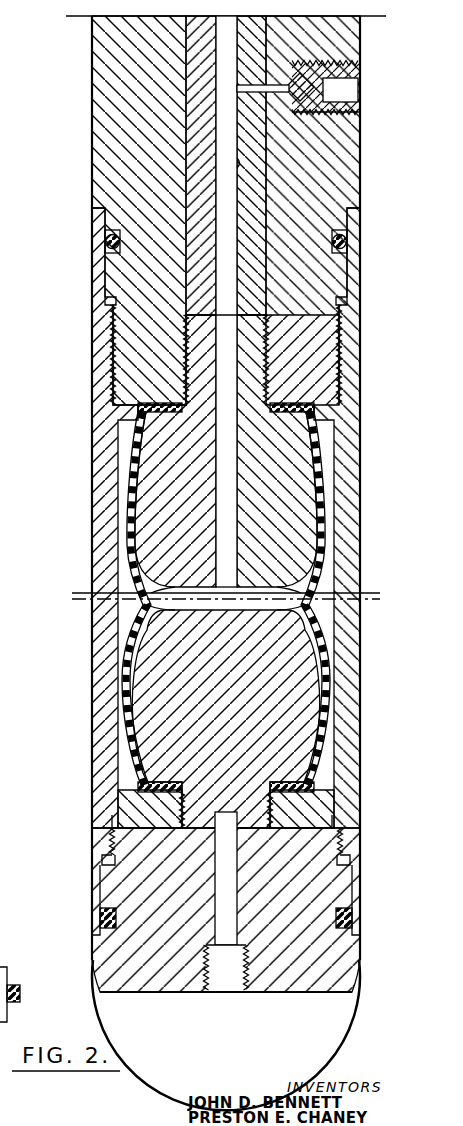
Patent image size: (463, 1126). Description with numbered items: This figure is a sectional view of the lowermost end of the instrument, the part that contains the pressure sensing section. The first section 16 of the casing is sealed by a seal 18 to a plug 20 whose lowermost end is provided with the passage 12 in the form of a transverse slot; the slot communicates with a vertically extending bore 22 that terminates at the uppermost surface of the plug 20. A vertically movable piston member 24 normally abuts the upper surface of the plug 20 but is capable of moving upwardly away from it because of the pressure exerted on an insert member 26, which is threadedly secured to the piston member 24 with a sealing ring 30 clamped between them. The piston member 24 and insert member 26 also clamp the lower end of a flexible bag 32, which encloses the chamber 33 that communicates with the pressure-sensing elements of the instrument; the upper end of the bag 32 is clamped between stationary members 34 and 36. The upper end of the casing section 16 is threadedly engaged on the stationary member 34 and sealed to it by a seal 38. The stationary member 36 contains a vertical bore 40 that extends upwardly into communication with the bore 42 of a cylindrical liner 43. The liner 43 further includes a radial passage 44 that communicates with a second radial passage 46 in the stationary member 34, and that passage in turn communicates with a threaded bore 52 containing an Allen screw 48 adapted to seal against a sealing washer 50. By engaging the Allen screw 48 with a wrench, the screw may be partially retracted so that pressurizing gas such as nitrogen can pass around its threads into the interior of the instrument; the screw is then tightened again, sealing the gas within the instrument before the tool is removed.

The passage 12 is at (328, 1020).
The first section of casing 16 is at (100, 797).
The seal 18 is at (100, 915).
The plug 20 is at (178, 911).
The bore 22 is at (236, 902).
The piston member 24 is at (326, 811).
The insert member 26 is at (235, 719).
The sealing ring 30 is at (283, 786).
The flexible bag 32 is at (137, 607).
The chamber 33 is at (205, 590).
The stationary member 34 is at (157, 137).
The stationary member 36 is at (287, 504).
The seal 38 is at (108, 244).
The vertical bore 40 is at (220, 500).
The bore 42 is at (239, 171).
The cylindrical liner 43 is at (186, 179).
The radial passage 44 is at (249, 85).
The second radial passage 46 is at (313, 210).
The Allen screw 48 is at (320, 87).
The sealing washer 50 is at (293, 75).
The threaded bore 52 is at (322, 115).